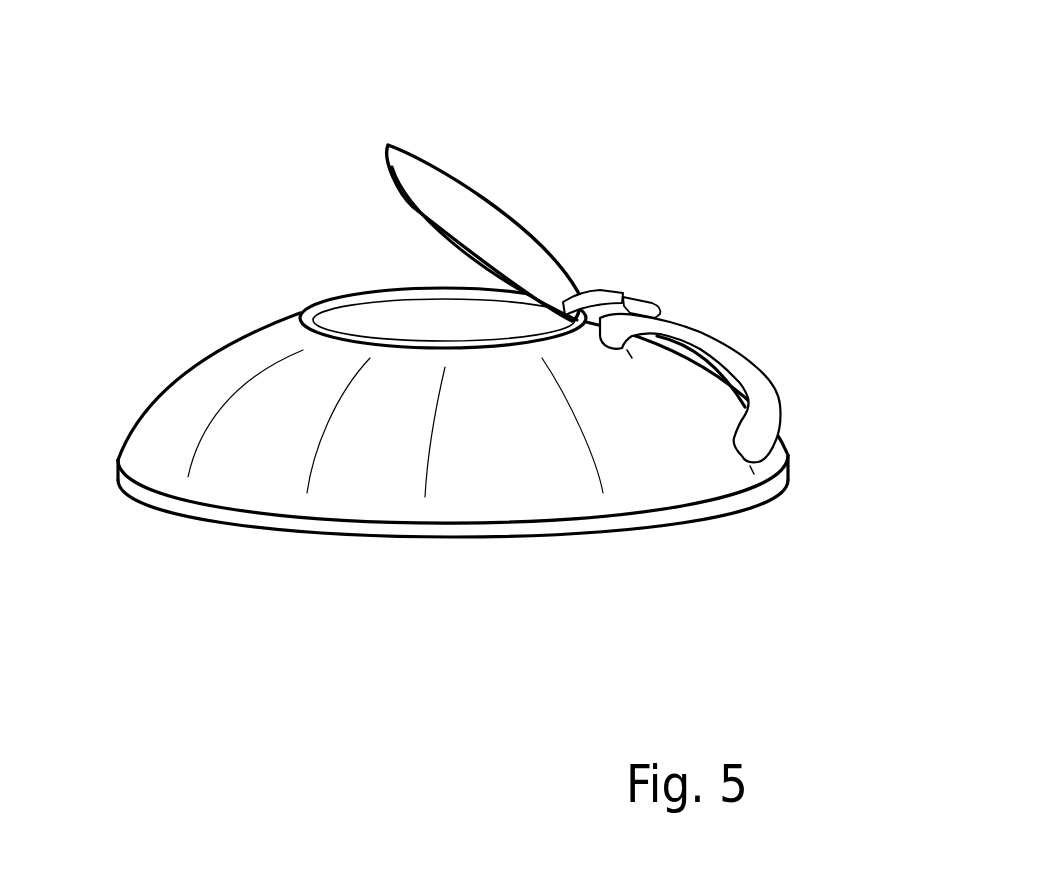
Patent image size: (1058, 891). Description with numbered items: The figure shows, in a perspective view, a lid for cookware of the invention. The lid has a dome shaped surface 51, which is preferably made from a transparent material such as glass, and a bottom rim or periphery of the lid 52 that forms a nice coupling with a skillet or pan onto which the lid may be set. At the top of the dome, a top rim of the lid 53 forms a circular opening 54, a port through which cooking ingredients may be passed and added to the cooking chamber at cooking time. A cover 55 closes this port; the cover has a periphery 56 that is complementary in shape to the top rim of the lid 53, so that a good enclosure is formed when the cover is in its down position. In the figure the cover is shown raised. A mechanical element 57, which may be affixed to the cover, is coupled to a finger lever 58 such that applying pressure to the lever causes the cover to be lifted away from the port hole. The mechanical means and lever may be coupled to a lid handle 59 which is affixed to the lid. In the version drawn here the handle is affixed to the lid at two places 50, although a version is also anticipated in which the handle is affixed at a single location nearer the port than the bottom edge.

The places of handle affixation 50 is at (630, 355).
The dome shaped surface 51 is at (215, 378).
The bottom rim of the lid 52 is at (353, 530).
The top rim of the lid 53 is at (315, 302).
The circular opening 54 is at (418, 325).
The cover 55 is at (420, 172).
The periphery of the cover 56 is at (390, 170).
The mechanical element 57 is at (608, 295).
The finger lever 58 is at (653, 310).
The lid handle 59 is at (750, 359).